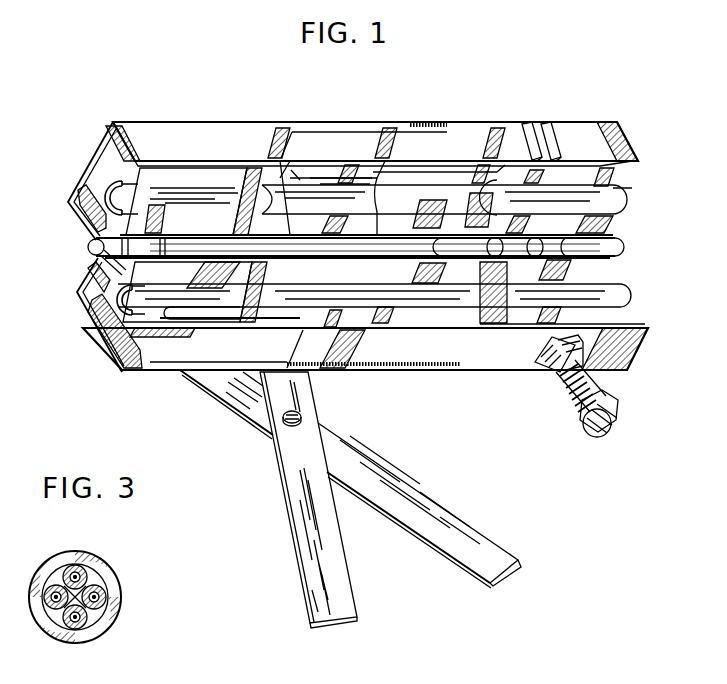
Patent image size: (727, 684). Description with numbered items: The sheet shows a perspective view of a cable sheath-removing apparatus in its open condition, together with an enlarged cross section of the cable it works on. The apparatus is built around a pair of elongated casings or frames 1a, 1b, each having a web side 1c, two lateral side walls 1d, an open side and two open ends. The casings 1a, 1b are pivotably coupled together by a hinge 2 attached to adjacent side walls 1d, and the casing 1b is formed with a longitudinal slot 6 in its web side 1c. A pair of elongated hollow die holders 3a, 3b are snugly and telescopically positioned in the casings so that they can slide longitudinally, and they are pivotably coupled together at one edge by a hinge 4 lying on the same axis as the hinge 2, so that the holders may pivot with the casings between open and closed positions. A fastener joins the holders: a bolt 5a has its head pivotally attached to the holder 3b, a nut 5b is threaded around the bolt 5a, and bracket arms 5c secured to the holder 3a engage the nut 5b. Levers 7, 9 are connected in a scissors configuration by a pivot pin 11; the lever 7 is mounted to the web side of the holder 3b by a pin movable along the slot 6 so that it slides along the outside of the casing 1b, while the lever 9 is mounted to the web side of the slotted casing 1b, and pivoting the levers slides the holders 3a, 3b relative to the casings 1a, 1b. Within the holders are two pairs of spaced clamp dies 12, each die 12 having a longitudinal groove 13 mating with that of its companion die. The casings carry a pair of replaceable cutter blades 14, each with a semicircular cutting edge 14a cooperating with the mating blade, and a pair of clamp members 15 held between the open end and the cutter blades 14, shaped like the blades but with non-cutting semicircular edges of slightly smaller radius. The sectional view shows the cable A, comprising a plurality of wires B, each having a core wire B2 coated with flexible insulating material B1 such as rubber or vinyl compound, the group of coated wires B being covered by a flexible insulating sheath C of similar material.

In FIG. 1, the elongated casing 1a is at (87, 168).
In FIG. 1, the elongated casing 1b is at (105, 346).
In FIG. 1, the web side 1c is at (180, 183).
In FIG. 1, the lateral side wall 1d is at (233, 141).
In FIG. 1, the hinge 2 is at (89, 250).
In FIG. 1, the die holder 3a is at (618, 142).
In FIG. 1, the die holder 3b is at (484, 352).
In FIG. 1, the hinge 4 is at (592, 248).
In FIG. 1, the bolt 5a is at (586, 378).
In FIG. 1, the nut 5b is at (578, 412).
In FIG. 1, the bracket arms 5c is at (557, 125).
In FIG. 1, the longitudinal slot 6 is at (210, 350).
In FIG. 1, the lever 7 is at (318, 562).
In FIG. 1, the lever 9 is at (420, 506).
In FIG. 1, the pivot pin 11 is at (301, 417).
In FIG. 1, the clamp die 12 is at (365, 272).
In FIG. 1, the longitudinal groove 13 is at (597, 204).
In FIG. 1, the cutter blade 14 is at (130, 266).
In FIG. 1, the semicircular cutting edge 14a is at (113, 200).
In FIG. 1, the clamp member 15 is at (120, 330).
In FIG. 3, the cable A is at (55, 544).
In FIG. 3, the wire B is at (103, 622).
In FIG. 3, the flexible insulating material B1 is at (107, 598).
In FIG. 3, the core wire B2 is at (110, 585).
In FIG. 3, the flexible insulating sheath C is at (92, 561).